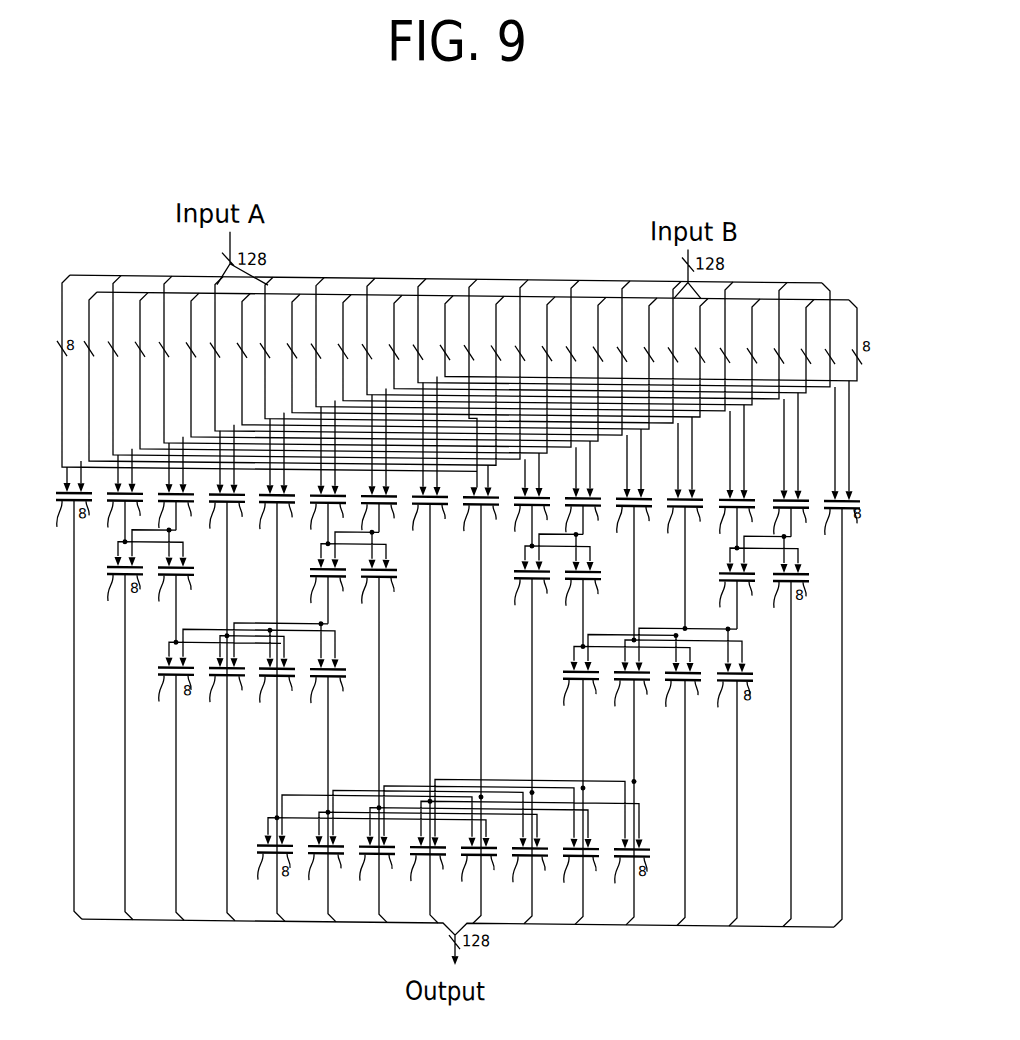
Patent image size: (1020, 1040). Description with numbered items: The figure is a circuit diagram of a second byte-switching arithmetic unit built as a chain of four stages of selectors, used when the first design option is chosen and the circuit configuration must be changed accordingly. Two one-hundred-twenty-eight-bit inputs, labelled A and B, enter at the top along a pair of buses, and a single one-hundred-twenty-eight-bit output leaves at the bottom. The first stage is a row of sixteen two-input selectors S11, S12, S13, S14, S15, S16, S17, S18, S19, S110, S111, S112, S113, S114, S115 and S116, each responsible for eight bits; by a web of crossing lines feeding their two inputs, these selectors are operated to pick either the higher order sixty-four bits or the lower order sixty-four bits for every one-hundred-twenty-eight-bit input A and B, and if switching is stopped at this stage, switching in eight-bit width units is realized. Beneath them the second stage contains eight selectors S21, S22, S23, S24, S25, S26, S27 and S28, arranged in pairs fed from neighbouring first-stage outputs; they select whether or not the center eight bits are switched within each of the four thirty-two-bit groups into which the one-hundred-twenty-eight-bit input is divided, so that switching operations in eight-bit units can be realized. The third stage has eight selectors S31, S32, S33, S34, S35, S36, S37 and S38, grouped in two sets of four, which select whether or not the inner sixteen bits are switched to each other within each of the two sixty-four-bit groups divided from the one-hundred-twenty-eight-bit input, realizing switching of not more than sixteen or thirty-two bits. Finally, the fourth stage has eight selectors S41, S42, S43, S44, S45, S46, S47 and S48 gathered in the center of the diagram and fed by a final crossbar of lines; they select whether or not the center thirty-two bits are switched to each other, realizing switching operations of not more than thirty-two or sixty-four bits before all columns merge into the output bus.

The two-input selector S11 is at (79, 521).
The two-input selector S12 is at (130, 521).
The two-input selector S13 is at (170, 509).
The two-input selector S14 is at (221, 509).
The two-input selector S15 is at (271, 509).
The two-input selector S16 is at (322, 509).
The two-input selector S17 is at (373, 509).
The two-input selector S18 is at (424, 509).
The two-input selector S19 is at (475, 509).
The two-input selector S110 is at (526, 509).
The two-input selector S111 is at (577, 509).
The two-input selector S112 is at (628, 509).
The two-input selector S113 is at (679, 509).
The two-input selector S114 is at (731, 509).
The two-input selector S115 is at (785, 509).
The two-input selector S116 is at (836, 509).
The second-stage selector S21 is at (130, 594).
The second-stage selector S22 is at (181, 594).
The second-stage selector S23 is at (333, 594).
The second-stage selector S24 is at (373, 582).
The second-stage selector S25 is at (537, 594).
The second-stage selector S26 is at (588, 594).
The second-stage selector S27 is at (742, 594).
The second-stage selector S28 is at (785, 582).
The third-stage selector S31 is at (170, 682).
The third-stage selector S32 is at (221, 682).
The third-stage selector S33 is at (271, 682).
The third-stage selector S34 is at (322, 682).
The third-stage selector S35 is at (575, 682).
The third-stage selector S36 is at (626, 682).
The third-stage selector S37 is at (677, 682).
The third-stage selector S38 is at (740, 694).
The fourth-stage selector S41 is at (280, 872).
The fourth-stage selector S42 is at (331, 872).
The fourth-stage selector S43 is at (382, 872).
The fourth-stage selector S44 is at (433, 872).
The fourth-stage selector S45 is at (484, 872).
The fourth-stage selector S46 is at (535, 872).
The fourth-stage selector S47 is at (586, 872).
The fourth-stage selector S48 is at (637, 872).